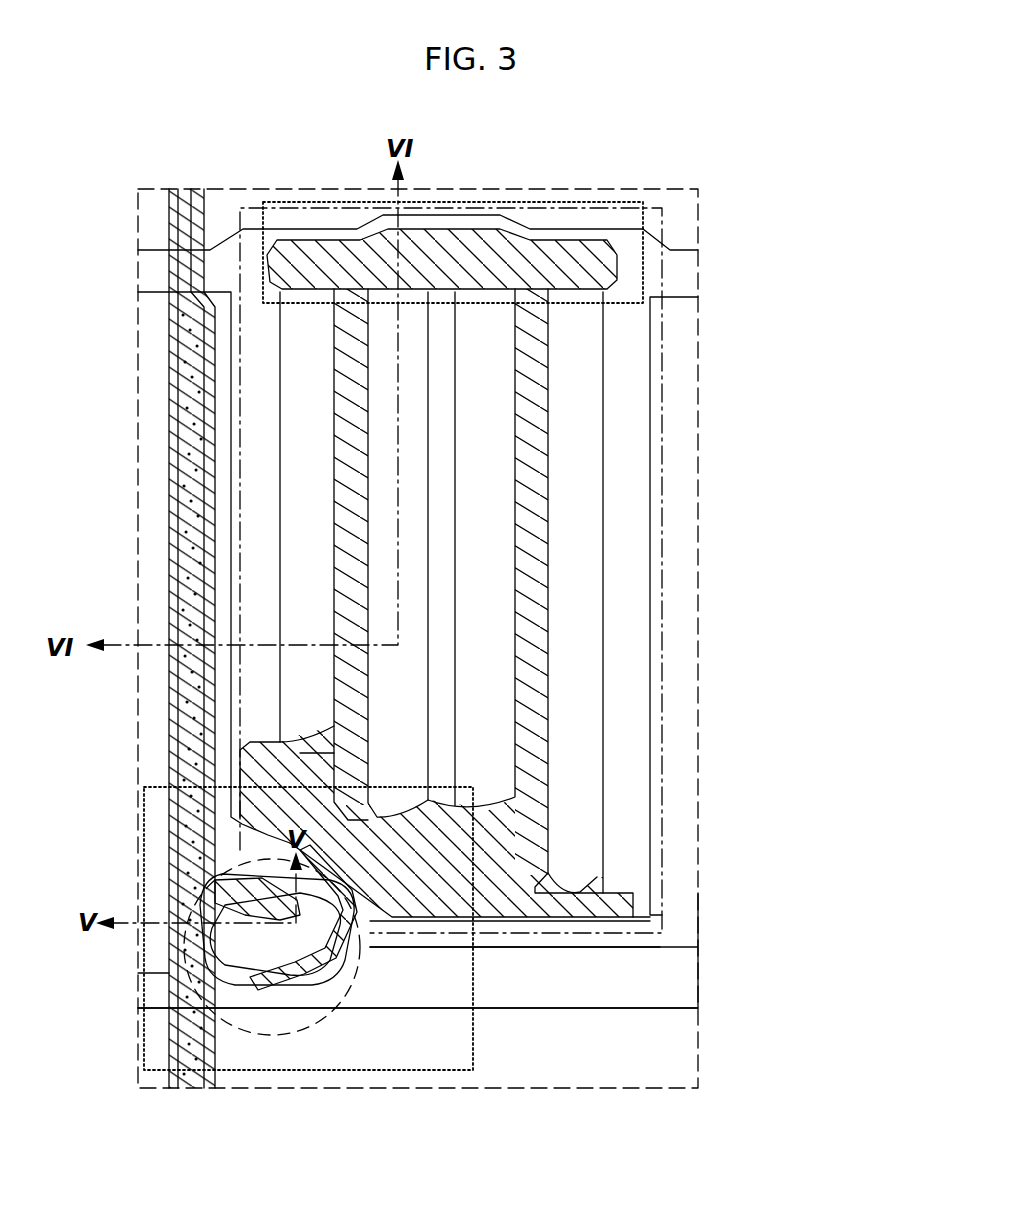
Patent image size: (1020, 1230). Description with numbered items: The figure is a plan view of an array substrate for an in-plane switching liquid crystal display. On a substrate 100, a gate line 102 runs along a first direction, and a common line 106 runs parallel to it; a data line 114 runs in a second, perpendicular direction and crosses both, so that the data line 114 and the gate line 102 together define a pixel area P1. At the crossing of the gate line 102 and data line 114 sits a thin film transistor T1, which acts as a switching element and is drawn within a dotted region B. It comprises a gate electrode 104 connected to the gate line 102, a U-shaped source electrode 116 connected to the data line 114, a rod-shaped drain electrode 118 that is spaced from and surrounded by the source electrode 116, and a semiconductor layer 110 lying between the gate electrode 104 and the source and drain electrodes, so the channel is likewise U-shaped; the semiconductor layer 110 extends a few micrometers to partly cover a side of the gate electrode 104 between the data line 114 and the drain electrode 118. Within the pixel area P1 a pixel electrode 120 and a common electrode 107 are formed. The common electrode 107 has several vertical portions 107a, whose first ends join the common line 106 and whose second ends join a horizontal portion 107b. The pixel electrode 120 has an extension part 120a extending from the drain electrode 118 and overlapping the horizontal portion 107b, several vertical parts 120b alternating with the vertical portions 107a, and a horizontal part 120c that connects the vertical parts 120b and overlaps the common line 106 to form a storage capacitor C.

The substrate 100 is at (700, 752).
The gate line 102 is at (625, 1010).
The gate electrode 104 is at (232, 868).
The common line 106 is at (607, 228).
The common electrode 107 is at (797, 918).
The vertical portions 107a is at (635, 922).
The horizontal portion 107b is at (660, 947).
The semiconductor layer 110 is at (325, 1000).
The data line 114 is at (169, 578).
The source electrode 116 is at (262, 990).
The drain electrode 118 is at (340, 975).
The pixel electrode 120 is at (833, 272).
The extension part 120a is at (650, 893).
The vertical parts 120b is at (548, 387).
The horizontal part 120c is at (617, 275).
The storage capacitor C is at (662, 210).
The TFT region B is at (416, 1070).
The pixel area P1 is at (678, 515).
The thin film transistor T1 is at (332, 1018).